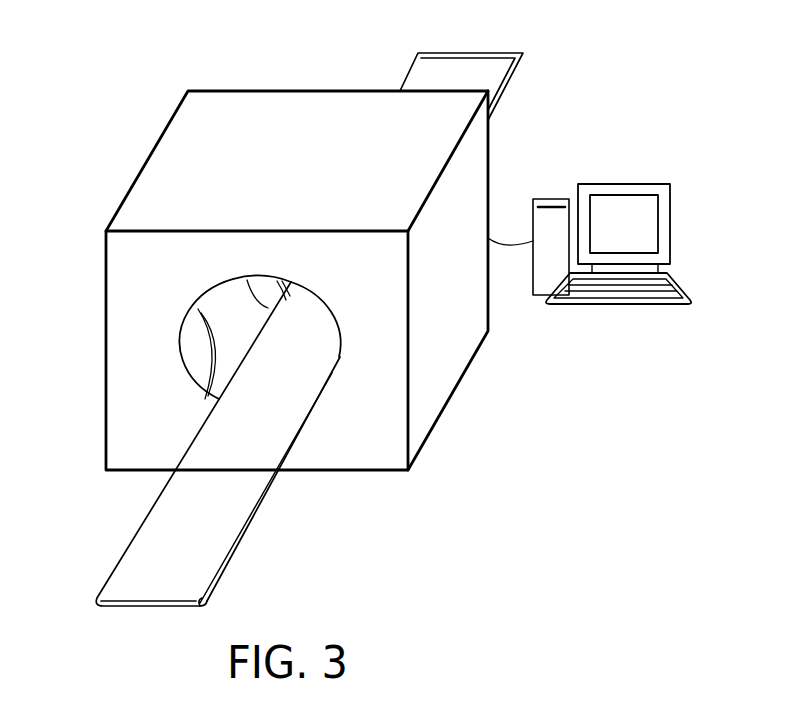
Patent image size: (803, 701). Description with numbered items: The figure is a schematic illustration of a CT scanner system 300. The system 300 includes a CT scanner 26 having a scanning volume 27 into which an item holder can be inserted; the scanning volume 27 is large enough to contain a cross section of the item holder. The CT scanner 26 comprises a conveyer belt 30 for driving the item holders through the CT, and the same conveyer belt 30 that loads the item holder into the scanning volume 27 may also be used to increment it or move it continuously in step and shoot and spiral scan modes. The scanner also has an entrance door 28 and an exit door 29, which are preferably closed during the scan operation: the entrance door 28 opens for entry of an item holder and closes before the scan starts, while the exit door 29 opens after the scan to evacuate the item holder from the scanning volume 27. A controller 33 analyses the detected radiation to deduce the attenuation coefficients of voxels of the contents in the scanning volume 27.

The CT scanner 26 is at (157, 142).
The scanning volume 27 is at (312, 372).
The entrance door 28 is at (192, 358).
The exit door 29 is at (267, 291).
The conveyer belt 30 is at (487, 65).
The controller 33 is at (598, 183).
The CT scanner system 300 is at (525, 102).